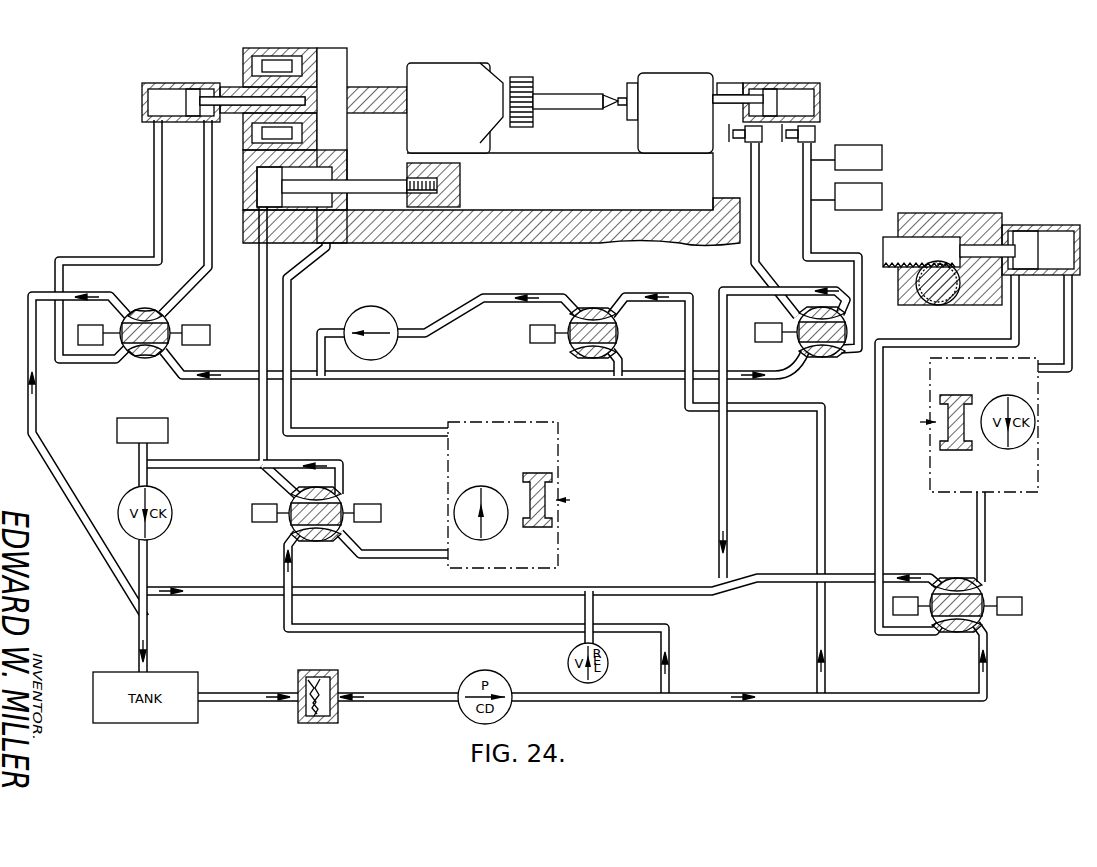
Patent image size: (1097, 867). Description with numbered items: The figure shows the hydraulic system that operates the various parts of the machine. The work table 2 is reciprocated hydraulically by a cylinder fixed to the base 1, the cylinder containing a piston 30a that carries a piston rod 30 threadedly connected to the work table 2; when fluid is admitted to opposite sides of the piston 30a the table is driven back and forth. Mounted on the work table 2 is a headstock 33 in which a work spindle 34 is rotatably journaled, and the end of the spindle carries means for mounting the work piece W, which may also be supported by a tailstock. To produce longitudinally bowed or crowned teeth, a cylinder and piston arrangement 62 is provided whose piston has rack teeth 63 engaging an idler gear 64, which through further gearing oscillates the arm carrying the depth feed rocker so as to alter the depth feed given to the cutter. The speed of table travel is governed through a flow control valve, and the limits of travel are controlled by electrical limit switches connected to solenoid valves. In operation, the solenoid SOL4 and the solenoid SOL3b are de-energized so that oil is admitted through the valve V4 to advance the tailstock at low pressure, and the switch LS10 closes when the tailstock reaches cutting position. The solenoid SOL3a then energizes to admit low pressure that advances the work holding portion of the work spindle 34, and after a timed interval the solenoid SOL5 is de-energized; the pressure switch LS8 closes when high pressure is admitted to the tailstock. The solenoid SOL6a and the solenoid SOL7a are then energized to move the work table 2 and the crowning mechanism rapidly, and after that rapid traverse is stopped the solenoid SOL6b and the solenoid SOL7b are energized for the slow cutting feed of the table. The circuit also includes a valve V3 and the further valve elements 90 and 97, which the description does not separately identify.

The base 1 is at (590, 230).
The work table 2 is at (652, 200).
The piston rod 30 is at (356, 182).
The piston 30a is at (272, 192).
The headstock 33 is at (442, 60).
The work spindle 34 is at (352, 92).
The cylinder and piston arrangement 62 is at (1048, 224).
The rack teeth 63 is at (890, 264).
The idler gear 64 is at (930, 302).
The pressure reducing valve 90 is at (386, 318).
The check valve unit 97 is at (496, 488).
The work piece W is at (521, 76).
The pressure switch LS8 is at (884, 156).
The switch LS10 is at (727, 83).
The solenoid valve V3 is at (140, 366).
The valve V4 is at (816, 363).
The solenoid SOL3a is at (90, 326).
The solenoid SOL3b is at (190, 326).
The solenoid SOL4 is at (758, 342).
The solenoid SOL5 is at (530, 337).
The solenoid SOL6a is at (256, 523).
The solenoid SOL6b is at (378, 496).
The solenoid SOL7a is at (900, 616).
The solenoid SOL7b is at (1018, 602).